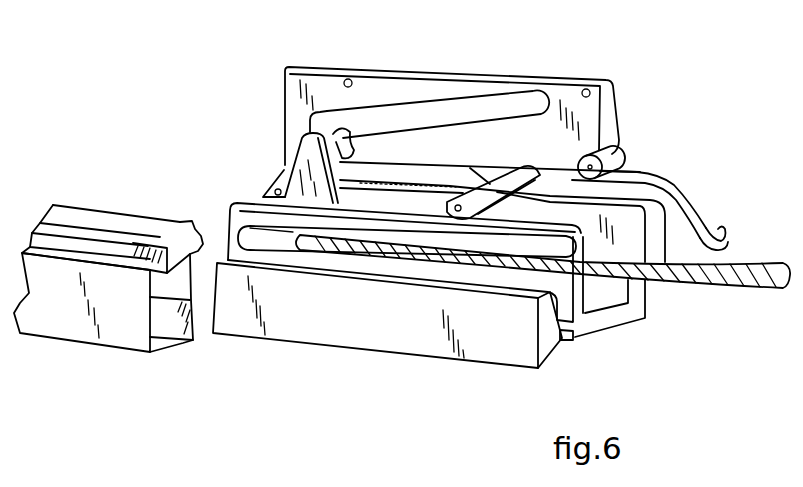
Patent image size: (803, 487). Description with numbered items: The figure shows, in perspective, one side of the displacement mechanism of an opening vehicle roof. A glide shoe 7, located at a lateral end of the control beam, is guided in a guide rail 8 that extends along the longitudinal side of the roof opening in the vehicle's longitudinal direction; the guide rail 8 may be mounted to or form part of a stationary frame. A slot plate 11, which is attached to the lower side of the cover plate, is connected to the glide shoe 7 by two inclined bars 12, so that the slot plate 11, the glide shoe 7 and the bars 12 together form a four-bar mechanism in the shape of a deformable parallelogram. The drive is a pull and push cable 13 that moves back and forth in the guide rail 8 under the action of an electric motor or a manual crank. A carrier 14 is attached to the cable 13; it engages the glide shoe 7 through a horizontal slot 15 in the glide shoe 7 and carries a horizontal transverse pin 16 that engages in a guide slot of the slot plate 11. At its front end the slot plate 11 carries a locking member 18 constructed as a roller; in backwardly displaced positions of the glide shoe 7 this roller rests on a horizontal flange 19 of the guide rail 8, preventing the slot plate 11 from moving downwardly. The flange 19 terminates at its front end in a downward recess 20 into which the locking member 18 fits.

The glide shoe 7 is at (551, 343).
The guide rail 8 is at (33, 323).
The slot plate 11 is at (553, 97).
The inclined bar 12 is at (495, 177).
The pull and push cable 13 is at (707, 281).
The carrier 14 is at (290, 175).
The horizontal slot 15 is at (493, 252).
The horizontal transverse pin 16 is at (337, 130).
The locking member 18 is at (594, 158).
The horizontal flange 19 is at (655, 178).
The downward recess 20 is at (710, 222).